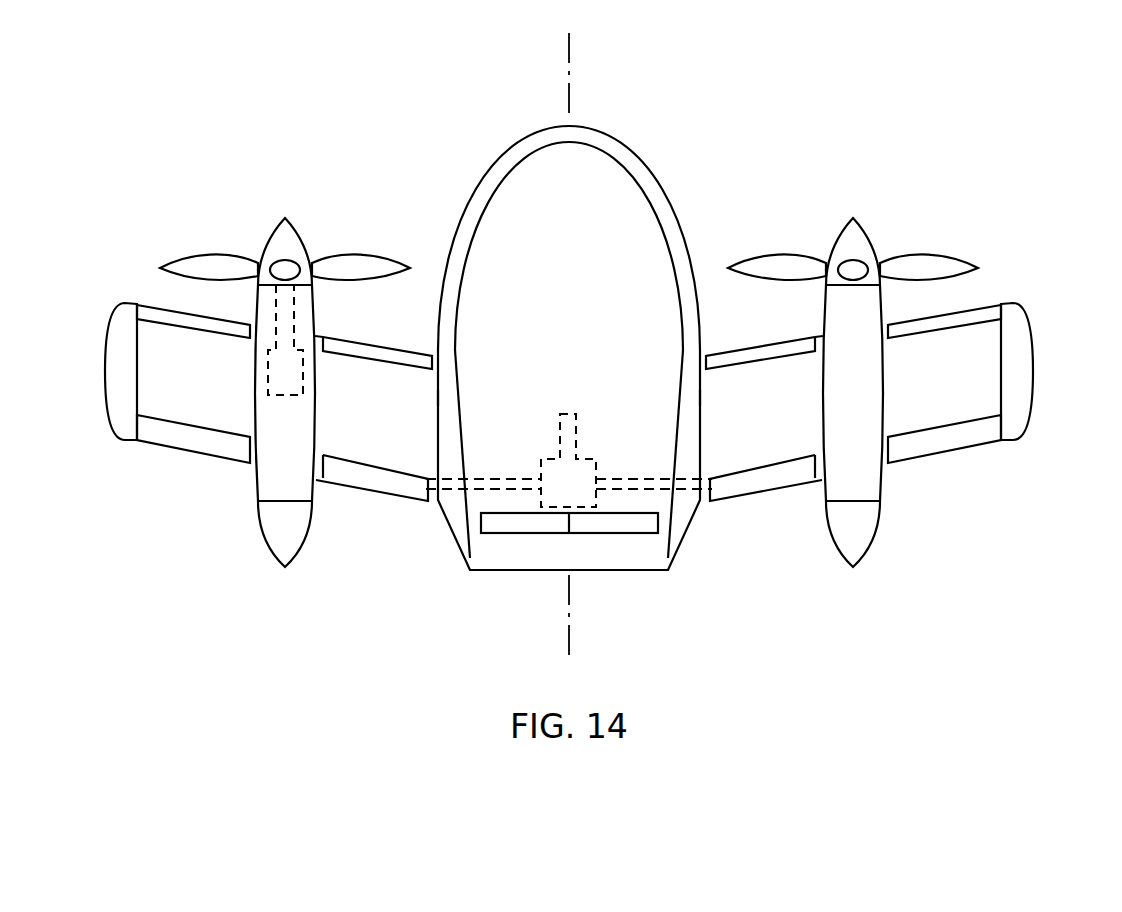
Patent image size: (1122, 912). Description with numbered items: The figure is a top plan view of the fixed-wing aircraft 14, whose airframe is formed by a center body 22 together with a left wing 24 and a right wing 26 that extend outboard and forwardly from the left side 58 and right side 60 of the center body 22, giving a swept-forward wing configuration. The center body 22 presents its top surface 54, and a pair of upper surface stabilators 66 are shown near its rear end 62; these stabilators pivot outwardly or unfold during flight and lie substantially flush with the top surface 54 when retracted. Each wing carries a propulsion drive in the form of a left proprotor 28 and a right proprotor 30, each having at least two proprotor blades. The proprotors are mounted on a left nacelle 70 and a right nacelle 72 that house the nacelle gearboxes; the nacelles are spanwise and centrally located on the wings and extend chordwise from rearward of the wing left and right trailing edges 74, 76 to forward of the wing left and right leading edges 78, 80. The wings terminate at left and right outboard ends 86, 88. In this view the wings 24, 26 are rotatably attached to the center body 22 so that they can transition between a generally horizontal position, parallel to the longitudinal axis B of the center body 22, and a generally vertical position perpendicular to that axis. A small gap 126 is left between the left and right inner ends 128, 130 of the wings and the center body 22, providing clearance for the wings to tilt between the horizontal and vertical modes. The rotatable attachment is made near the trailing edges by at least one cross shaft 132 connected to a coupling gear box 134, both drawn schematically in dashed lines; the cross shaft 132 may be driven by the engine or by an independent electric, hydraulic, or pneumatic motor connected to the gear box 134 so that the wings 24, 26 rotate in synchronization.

The fixed-wing aircraft 14 is at (797, 101).
The center body 22 is at (583, 162).
The left wing 24 is at (115, 380).
The right wing 26 is at (1023, 380).
The left proprotor 28 is at (285, 218).
The right proprotor 30 is at (853, 218).
The top surface 54 is at (553, 299).
The left side 58 is at (437, 328).
The right side 60 is at (703, 328).
The rear end 62 is at (547, 584).
The upper surface stabilators 66 is at (510, 527).
The left nacelle 70 is at (262, 488).
The right nacelle 72 is at (873, 486).
The wing left trailing edge 74 is at (156, 452).
The wing right trailing edge 76 is at (986, 450).
The wing left leading edge 78 is at (134, 303).
The wing right leading edge 80 is at (1003, 303).
The left outboard end 86 is at (105, 352).
The right outboard end 88 is at (1033, 352).
The gap 126 is at (430, 507).
The left inner end 128 is at (438, 398).
The right inner end 130 is at (700, 398).
The cross shaft 132 is at (507, 479).
The coupling gear box 134 is at (546, 457).